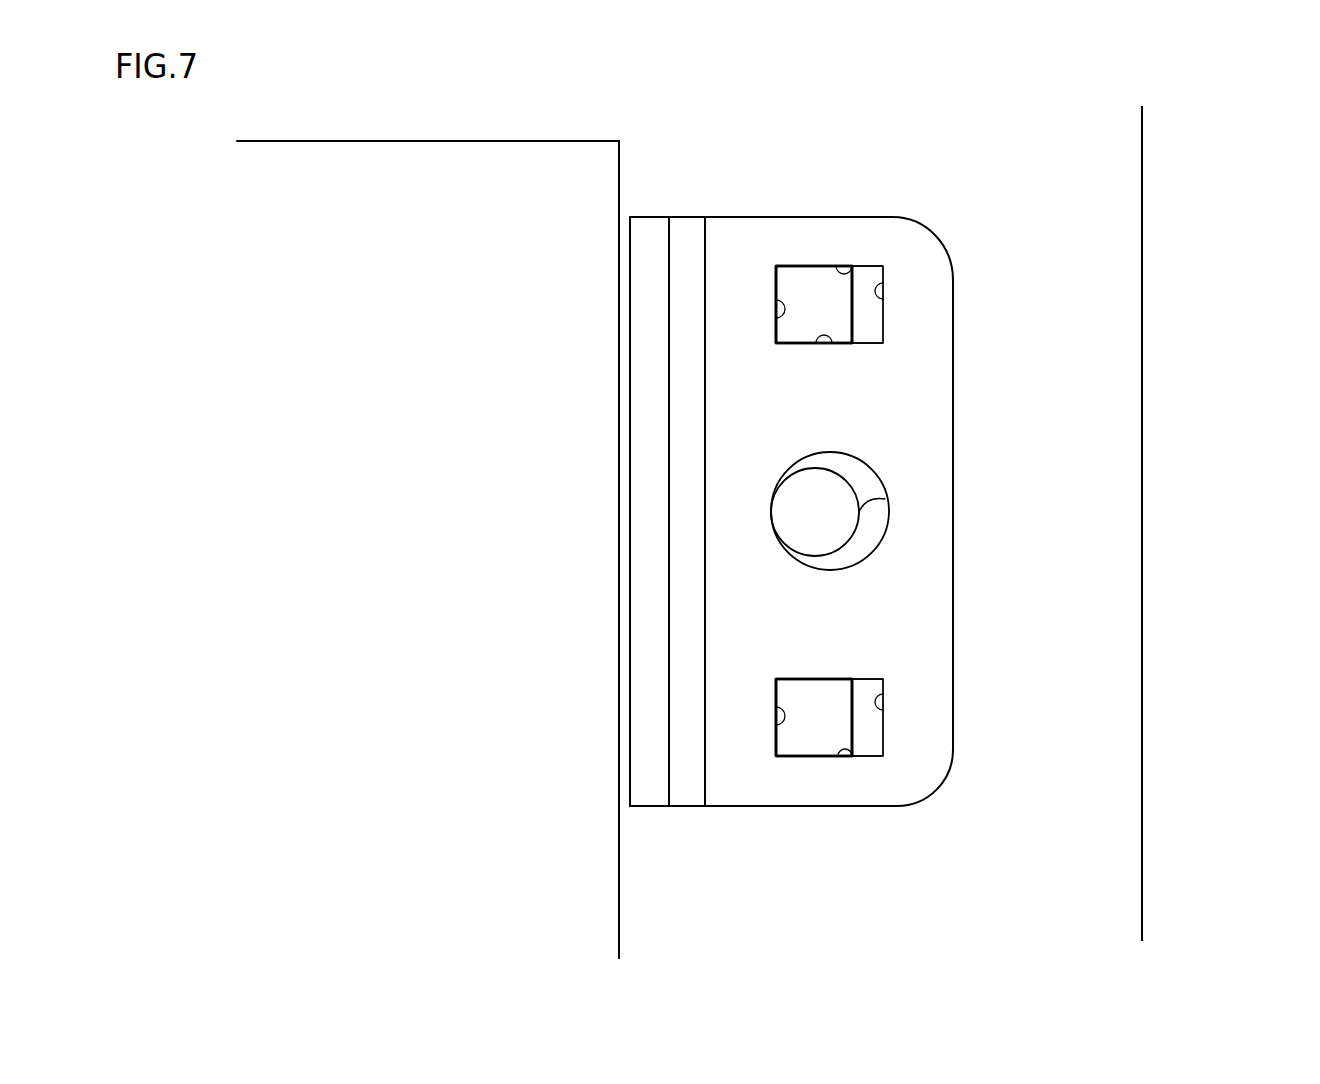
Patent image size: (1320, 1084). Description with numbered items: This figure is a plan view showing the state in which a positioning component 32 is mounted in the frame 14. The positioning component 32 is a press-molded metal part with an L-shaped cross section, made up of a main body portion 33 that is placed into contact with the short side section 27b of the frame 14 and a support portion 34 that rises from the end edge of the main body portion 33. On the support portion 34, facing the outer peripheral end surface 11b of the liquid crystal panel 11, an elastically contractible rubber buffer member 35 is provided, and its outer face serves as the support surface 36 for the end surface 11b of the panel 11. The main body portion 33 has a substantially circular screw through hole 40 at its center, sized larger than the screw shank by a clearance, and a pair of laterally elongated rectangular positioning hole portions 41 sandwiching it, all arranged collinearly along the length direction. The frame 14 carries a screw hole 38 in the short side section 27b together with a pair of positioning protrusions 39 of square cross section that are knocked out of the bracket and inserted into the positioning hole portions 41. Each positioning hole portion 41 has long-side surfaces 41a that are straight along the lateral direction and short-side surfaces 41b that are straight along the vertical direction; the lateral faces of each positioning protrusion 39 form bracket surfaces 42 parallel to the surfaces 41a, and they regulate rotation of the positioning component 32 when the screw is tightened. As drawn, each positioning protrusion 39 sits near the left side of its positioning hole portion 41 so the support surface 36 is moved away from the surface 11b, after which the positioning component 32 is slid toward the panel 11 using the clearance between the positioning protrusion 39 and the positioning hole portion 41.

The liquid crystal panel 11 is at (290, 181).
The outer peripheral end surface 11b is at (620, 888).
The frame 14 is at (1141, 155).
The short side section 27b is at (1107, 290).
The positioning component 32 is at (940, 252).
The main body portion 33 is at (937, 497).
The support portion 34 is at (688, 235).
The buffer member 35 is at (651, 235).
The support surface 36 is at (628, 268).
The screw hole 38 is at (842, 549).
The positioning protrusion 39 is at (838, 314).
The screw through hole 40 is at (860, 512).
The positioning hole portion 41 is at (829, 511).
The long side surface 41a is at (873, 264).
The short side surface 41b is at (773, 321).
The bracket surface 42 is at (818, 267).